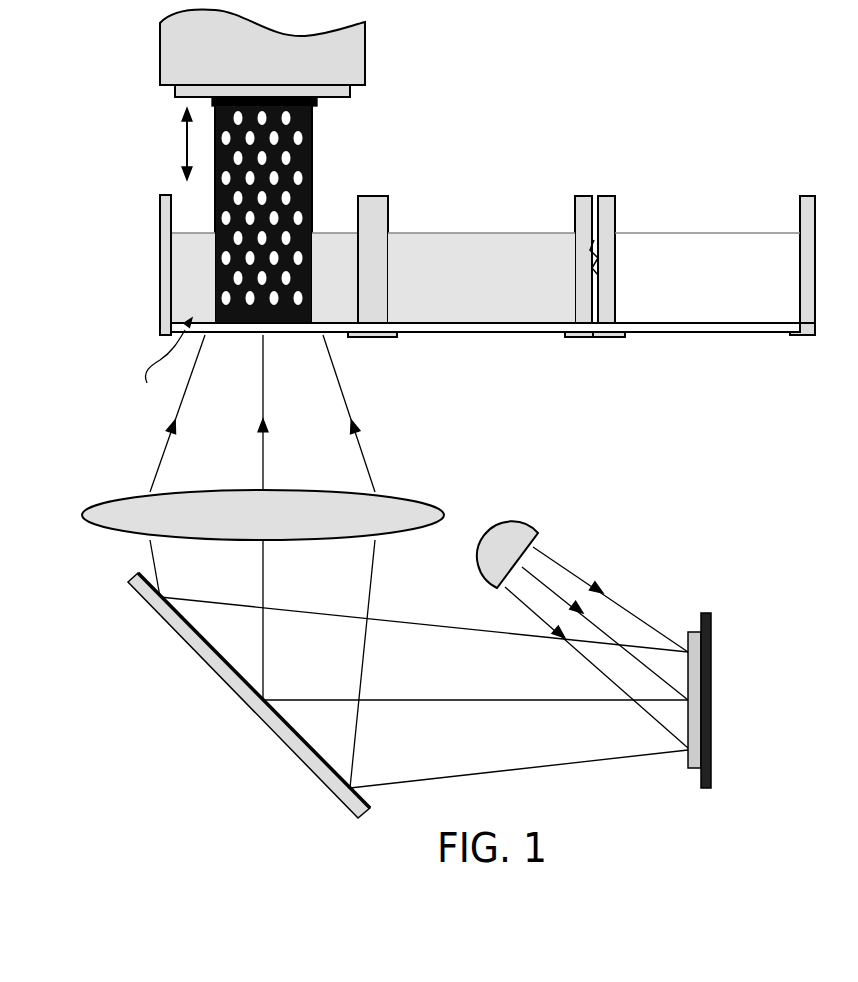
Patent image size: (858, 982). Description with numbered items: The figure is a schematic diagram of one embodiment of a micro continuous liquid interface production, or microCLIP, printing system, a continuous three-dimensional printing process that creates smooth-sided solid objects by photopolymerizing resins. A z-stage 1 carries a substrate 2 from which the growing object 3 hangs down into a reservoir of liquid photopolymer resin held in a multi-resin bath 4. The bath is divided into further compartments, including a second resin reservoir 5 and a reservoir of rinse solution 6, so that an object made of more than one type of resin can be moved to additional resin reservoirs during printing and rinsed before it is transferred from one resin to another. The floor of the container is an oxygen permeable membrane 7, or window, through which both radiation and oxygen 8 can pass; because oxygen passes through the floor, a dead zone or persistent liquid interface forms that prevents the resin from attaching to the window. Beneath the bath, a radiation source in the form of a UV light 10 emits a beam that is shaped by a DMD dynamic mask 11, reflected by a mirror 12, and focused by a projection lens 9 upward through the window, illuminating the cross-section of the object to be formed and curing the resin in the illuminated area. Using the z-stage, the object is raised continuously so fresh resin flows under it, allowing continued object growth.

The Z-Stage 1 is at (262, 95).
The Substrate 2 is at (347, 80).
The B-ink I printed part 3 is at (333, 240).
The Multi-resin Bath 4 is at (790, 124).
The B-ink II 5 is at (481, 278).
The Rinse 6 is at (707, 274).
The Oxygen Permeable Membrane 7 is at (753, 340).
The O2 oxygen 8 is at (160, 369).
The Projection Lens 9 is at (296, 561).
The UV Light 10 is at (582, 620).
The DMD Dynamic Mask 11 is at (737, 646).
The Mirror 12 is at (408, 695).